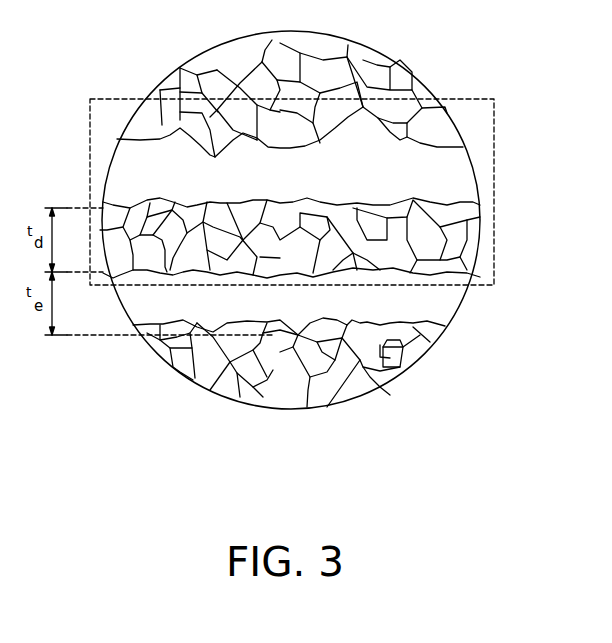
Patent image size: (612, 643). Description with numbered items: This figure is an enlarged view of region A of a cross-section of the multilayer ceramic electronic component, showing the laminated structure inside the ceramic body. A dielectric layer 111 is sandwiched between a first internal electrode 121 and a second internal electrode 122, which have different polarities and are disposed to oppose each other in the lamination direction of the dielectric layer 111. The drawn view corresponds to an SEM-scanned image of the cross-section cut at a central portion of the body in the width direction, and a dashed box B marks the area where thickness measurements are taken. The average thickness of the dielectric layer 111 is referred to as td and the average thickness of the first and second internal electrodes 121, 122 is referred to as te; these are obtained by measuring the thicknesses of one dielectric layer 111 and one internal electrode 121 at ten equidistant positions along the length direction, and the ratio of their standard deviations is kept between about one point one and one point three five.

The dielectric layer 111 is at (435, 96).
The first internal electrode 121 is at (462, 170).
The second internal electrode 122 is at (437, 310).
The region A is at (301, 456).
The region B is at (132, 100).